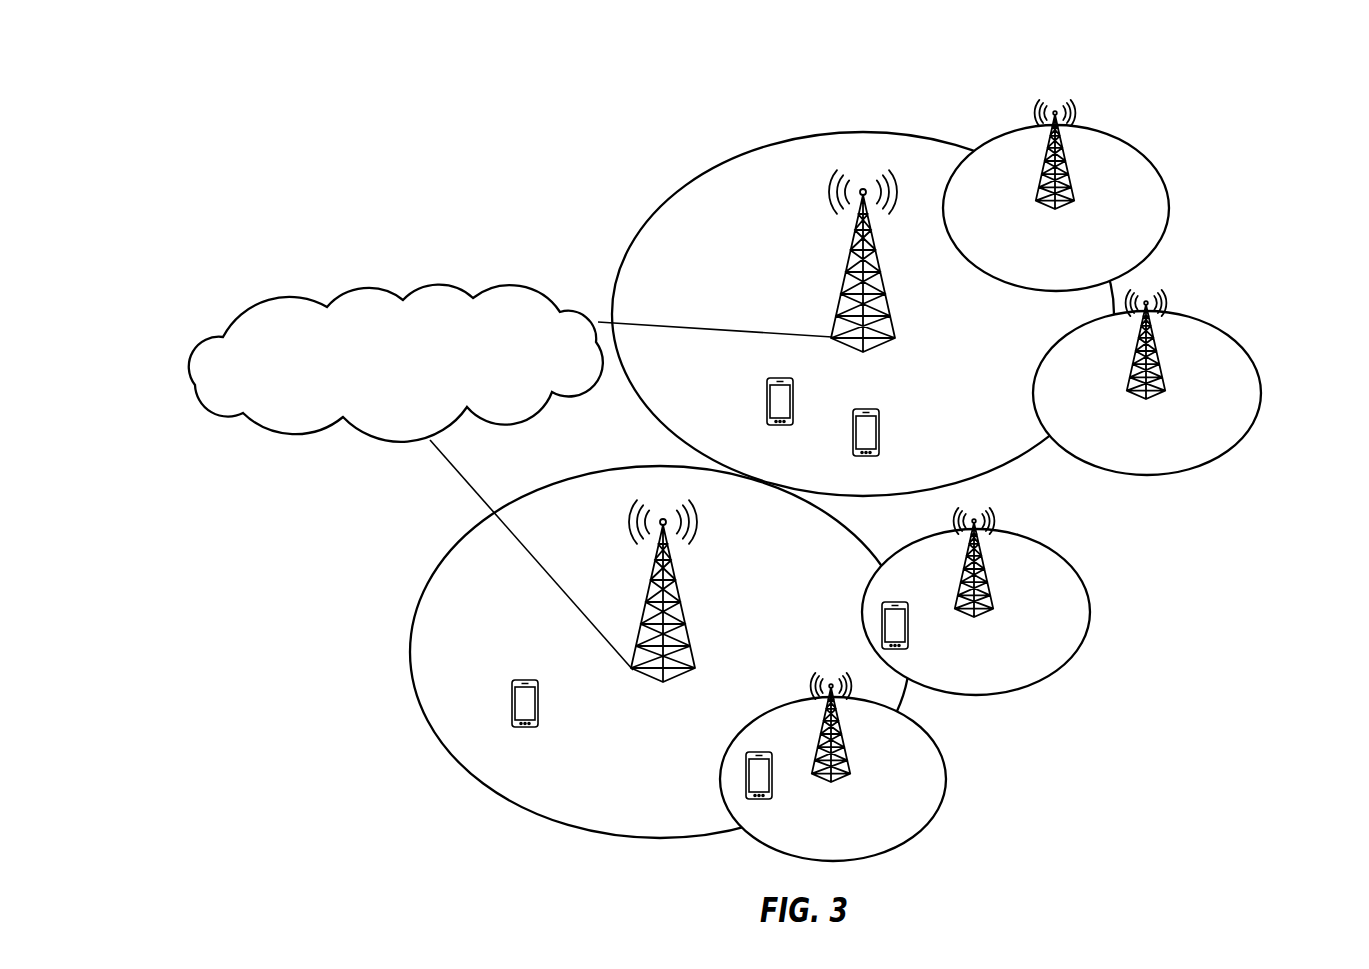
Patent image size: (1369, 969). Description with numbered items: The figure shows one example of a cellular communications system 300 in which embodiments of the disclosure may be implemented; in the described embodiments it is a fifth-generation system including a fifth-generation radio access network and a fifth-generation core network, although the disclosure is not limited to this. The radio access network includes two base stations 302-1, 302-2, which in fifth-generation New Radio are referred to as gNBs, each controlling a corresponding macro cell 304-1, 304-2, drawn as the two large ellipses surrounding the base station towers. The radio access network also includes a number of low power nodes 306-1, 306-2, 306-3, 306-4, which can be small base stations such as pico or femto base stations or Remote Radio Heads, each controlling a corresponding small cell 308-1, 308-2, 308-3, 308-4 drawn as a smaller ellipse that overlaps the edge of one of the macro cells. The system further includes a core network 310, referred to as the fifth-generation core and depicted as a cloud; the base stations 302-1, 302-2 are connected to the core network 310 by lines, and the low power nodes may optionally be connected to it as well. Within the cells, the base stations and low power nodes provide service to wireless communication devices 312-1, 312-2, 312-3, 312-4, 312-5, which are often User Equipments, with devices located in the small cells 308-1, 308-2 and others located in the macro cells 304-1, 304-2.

The cellular communications system 300 is at (1250, 88).
The base station 302-1 is at (683, 615).
The base station 302-2 is at (842, 288).
The macro cell 304-1 is at (525, 810).
The macro cell 304-2 is at (867, 132).
The low power node 306-1 is at (838, 775).
The low power node 306-2 is at (990, 607).
The low power node 306-3 is at (1153, 390).
The low power node 306-4 is at (1063, 202).
The small cell 308-1 is at (945, 780).
The small cell 308-2 is at (1090, 615).
The small cell 308-3 is at (1262, 403).
The small cell 308-4 is at (1168, 197).
The core network 310 is at (378, 405).
The wireless communication device 312-1 is at (773, 785).
The wireless communication device 312-2 is at (910, 627).
The wireless communication device 312-3 is at (538, 700).
The wireless communication device 312-4 is at (795, 408).
The wireless communication device 312-5 is at (878, 435).